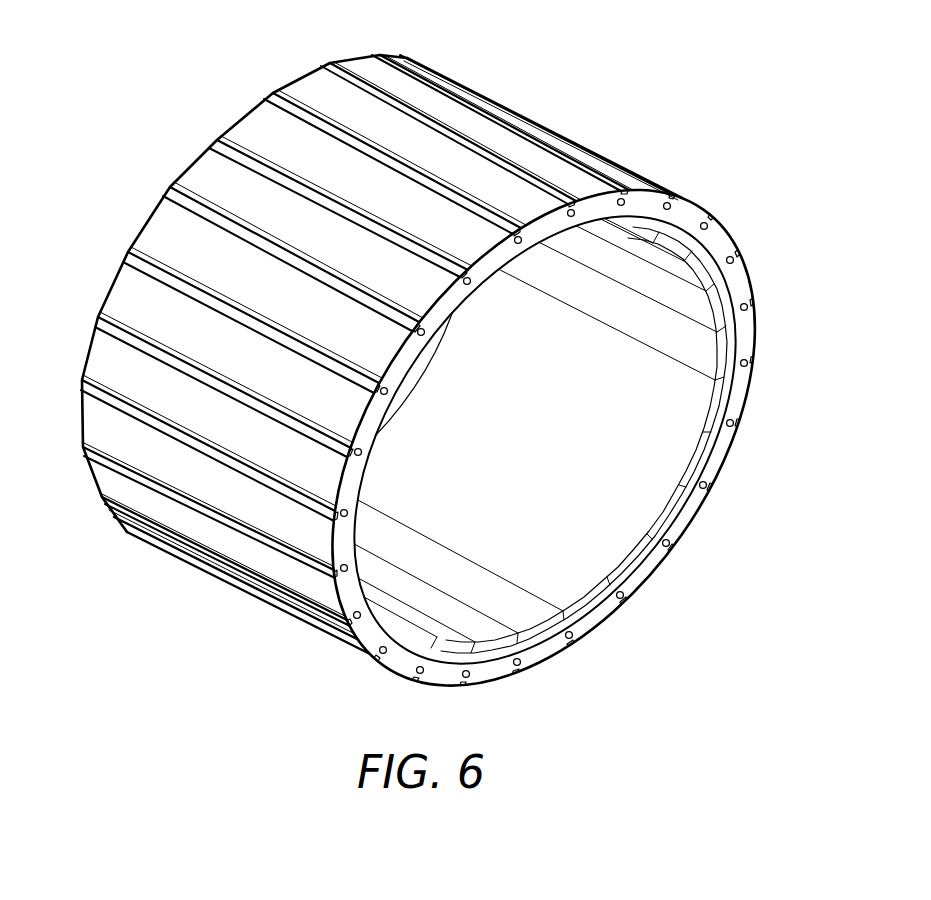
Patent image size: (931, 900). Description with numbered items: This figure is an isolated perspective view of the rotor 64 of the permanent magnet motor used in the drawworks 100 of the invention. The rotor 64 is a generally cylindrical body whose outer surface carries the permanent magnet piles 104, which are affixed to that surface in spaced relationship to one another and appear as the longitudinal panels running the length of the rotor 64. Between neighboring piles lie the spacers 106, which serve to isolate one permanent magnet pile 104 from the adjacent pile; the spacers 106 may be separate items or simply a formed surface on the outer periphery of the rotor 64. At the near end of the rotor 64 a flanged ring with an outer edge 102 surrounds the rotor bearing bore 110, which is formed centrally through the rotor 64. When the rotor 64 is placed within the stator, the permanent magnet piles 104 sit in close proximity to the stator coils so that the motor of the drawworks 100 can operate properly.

The rotor 64 is at (752, 340).
The drawworks 100 is at (717, 242).
The outer rim edge 102 is at (552, 653).
The permanent magnet piles 104 is at (118, 290).
The spacers 106 is at (215, 138).
The rotor bearing bore 110 is at (688, 515).